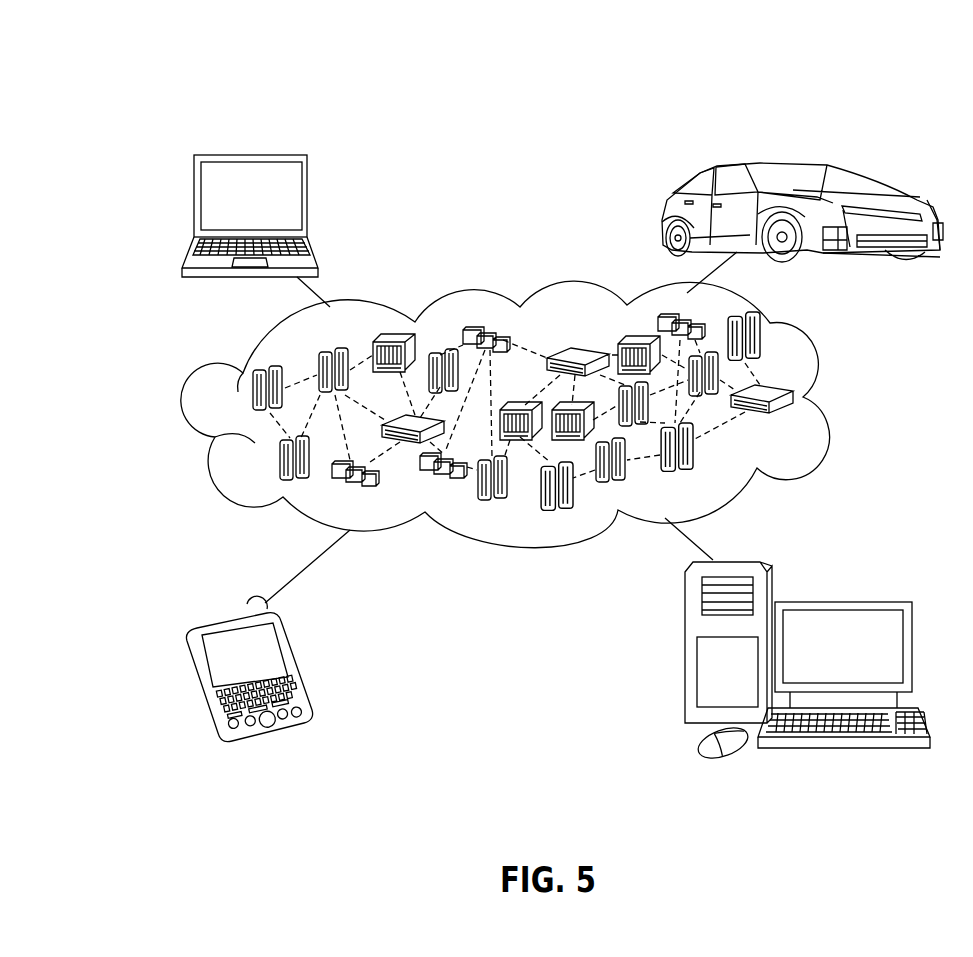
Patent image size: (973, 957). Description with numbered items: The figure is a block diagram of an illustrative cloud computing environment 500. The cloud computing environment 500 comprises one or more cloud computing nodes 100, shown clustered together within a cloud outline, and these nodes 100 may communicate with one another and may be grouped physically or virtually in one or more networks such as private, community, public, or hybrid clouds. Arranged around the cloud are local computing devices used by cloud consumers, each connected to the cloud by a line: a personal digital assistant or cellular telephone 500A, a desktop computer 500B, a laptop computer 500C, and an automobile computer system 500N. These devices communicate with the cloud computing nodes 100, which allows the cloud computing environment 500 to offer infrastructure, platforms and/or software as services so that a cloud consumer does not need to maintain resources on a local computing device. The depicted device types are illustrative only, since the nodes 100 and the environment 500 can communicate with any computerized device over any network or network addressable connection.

The cloud computing environment 500 is at (135, 78).
The cloud computing nodes 100 is at (803, 424).
The personal digital assistant (PDA) or cellular telephone 500A is at (300, 660).
The desktop computer 500B is at (842, 600).
The laptop computer 500C is at (310, 203).
The automobile computer system 500N is at (662, 218).